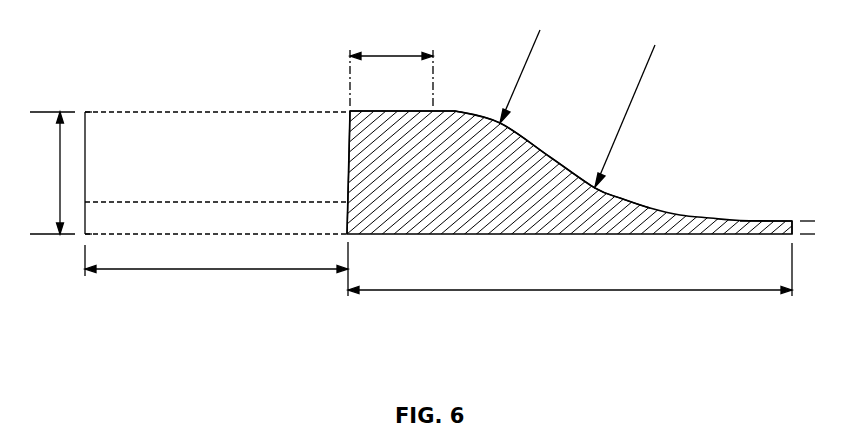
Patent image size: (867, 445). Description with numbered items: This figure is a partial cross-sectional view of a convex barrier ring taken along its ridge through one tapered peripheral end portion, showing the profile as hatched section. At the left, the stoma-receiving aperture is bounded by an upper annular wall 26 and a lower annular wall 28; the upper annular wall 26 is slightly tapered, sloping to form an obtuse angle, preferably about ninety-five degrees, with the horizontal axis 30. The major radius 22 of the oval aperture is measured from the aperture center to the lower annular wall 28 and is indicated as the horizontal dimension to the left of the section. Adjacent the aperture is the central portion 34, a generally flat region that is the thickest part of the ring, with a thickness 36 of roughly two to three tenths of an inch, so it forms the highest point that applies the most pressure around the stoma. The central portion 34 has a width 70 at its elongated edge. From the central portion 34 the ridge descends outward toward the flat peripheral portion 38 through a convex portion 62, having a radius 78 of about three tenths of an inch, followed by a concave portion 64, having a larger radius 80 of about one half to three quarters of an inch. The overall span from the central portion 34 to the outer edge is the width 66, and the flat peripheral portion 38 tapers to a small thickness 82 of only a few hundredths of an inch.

The major radius 22 is at (230, 270).
The upper annular wall 26 is at (349, 160).
The lower annular wall 28 is at (347, 220).
The horizontal axis 30 is at (130, 201).
The central portion 34 is at (373, 111).
The thickness 36 is at (49, 173).
The peripheral portion 38 is at (785, 220).
The convex portion 62 is at (507, 125).
The concave portion 64 is at (603, 191).
The width 66 is at (578, 291).
The width 70 is at (385, 54).
The radius 78 is at (532, 52).
The radius 80 is at (645, 70).
The thickness 82 is at (816, 228).